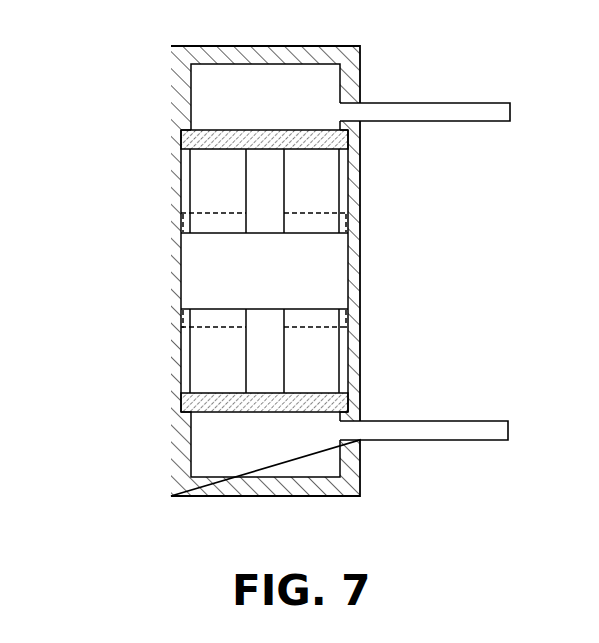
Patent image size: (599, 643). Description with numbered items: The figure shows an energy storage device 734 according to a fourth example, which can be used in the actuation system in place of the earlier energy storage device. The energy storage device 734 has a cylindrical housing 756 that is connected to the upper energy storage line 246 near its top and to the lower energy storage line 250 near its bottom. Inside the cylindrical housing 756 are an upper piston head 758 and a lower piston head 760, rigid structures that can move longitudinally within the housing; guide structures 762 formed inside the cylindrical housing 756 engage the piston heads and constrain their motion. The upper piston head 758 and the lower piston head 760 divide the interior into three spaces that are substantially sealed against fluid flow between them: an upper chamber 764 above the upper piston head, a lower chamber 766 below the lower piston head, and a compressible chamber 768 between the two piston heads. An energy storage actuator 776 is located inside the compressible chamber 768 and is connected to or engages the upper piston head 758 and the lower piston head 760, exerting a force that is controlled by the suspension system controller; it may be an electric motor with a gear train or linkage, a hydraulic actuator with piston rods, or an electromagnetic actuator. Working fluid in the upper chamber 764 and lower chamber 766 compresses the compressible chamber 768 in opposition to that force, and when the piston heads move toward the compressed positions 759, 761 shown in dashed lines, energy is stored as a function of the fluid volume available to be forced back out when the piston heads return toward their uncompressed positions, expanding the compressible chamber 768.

The energy storage device 734 is at (124, 75).
The cylindrical housing 756 is at (320, 46).
The upper piston head 758 is at (181, 139).
The compressed position 759 is at (181, 223).
The lower piston head 760 is at (185, 402).
The compressed position 761 is at (181, 317).
The guide structures 762 is at (181, 268).
The upper chamber 764 is at (284, 108).
The lower chamber 766 is at (284, 456).
The compressible chamber 768 is at (330, 370).
The energy storage actuator 776 is at (330, 269).
The upper energy storage line 246 is at (473, 101).
The lower energy storage line 250 is at (473, 420).